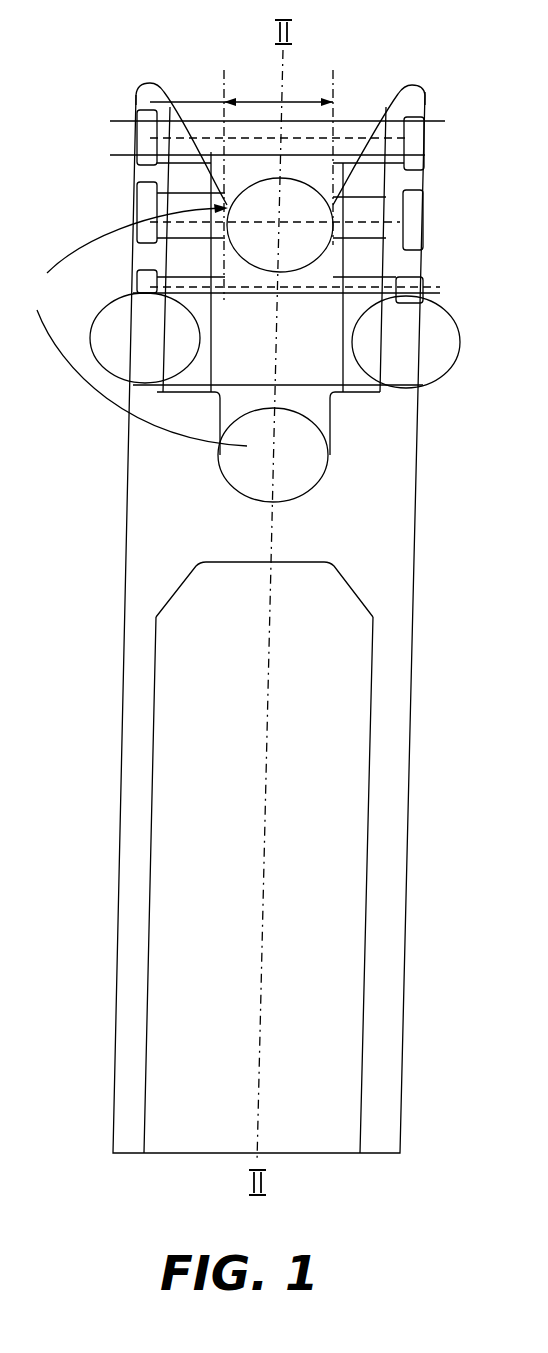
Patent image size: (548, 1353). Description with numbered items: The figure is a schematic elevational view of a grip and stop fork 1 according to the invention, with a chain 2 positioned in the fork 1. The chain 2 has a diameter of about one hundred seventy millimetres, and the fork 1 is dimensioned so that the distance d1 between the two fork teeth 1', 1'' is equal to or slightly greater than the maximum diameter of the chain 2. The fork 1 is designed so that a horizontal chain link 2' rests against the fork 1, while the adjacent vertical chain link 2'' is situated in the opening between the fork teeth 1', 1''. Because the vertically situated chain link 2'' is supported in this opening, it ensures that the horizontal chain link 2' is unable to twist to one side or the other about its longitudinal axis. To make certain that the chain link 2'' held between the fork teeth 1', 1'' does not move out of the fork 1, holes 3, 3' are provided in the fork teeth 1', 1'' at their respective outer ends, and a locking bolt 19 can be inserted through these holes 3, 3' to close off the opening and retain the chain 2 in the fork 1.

The grip and stop fork 1 is at (294, 622).
The fork tooth 1' is at (156, 122).
The fork tooth 1'' is at (414, 131).
The locking bolt 19 is at (211, 133).
The distance between the fork teeth d1 is at (303, 100).
The hole 3 is at (135, 251).
The hole 3' is at (417, 248).
The chain 2 is at (273, 340).
The horizontal chain link 2' is at (284, 328).
The vertical chain link 2'' is at (133, 325).